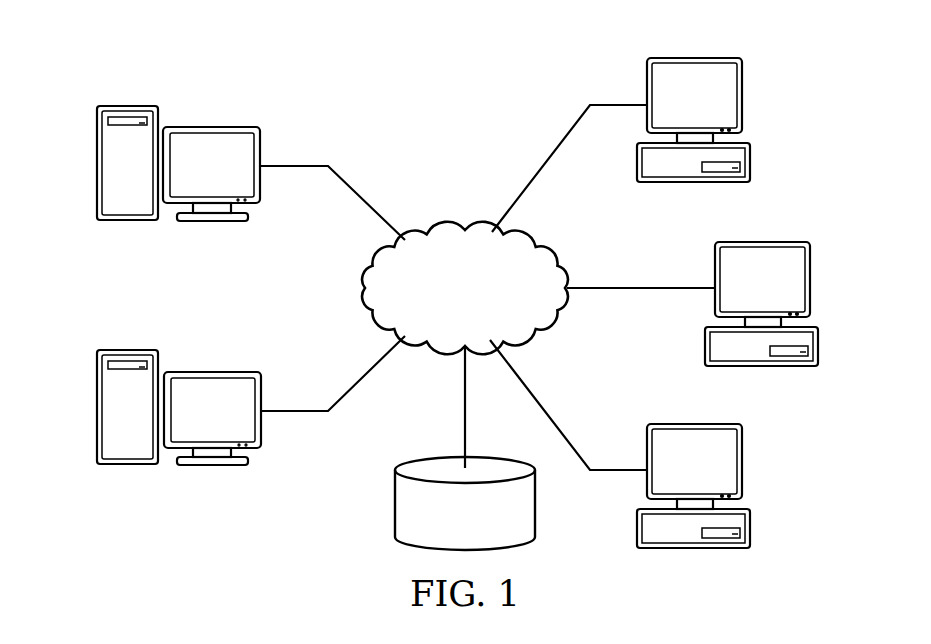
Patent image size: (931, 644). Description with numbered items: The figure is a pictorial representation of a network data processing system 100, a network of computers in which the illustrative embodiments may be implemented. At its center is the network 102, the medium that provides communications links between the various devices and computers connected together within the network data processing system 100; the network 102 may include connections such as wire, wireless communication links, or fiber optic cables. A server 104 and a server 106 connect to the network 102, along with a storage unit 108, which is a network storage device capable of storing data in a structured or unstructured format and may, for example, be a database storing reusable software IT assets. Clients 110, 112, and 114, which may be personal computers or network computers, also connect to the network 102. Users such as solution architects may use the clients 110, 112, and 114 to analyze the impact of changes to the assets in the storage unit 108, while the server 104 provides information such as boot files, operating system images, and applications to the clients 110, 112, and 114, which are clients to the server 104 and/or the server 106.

The network data processing system 100 is at (332, 73).
The network 102 is at (455, 228).
The server 104 is at (97, 406).
The server 106 is at (97, 165).
The storage unit 108 is at (395, 505).
The client 110 is at (752, 162).
The client 112 is at (821, 343).
The client 114 is at (752, 527).